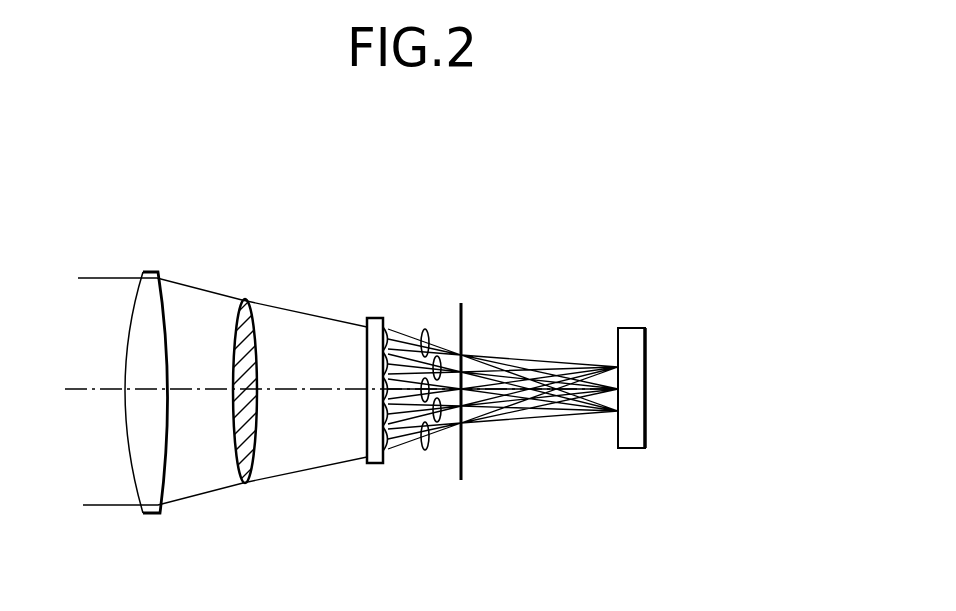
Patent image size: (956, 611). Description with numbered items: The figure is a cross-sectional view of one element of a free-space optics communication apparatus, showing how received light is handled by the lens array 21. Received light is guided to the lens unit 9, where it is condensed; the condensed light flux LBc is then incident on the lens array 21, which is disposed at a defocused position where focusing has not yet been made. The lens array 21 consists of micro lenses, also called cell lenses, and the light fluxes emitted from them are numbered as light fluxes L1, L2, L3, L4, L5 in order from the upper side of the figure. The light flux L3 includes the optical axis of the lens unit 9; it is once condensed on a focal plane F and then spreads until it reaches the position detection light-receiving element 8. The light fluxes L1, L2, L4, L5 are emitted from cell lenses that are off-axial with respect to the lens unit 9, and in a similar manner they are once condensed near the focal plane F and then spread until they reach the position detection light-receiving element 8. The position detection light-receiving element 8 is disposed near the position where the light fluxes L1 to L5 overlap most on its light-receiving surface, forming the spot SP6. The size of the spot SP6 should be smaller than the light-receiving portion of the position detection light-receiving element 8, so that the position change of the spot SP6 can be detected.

The lens unit 9 is at (153, 274).
The light flux LBc is at (242, 298).
The lens array 21 is at (372, 318).
The light flux L1 is at (424, 329).
The light flux L2 is at (437, 355).
The light flux L3 is at (421, 379).
The light flux L4 is at (437, 423).
The light flux L5 is at (425, 451).
The focal plane F is at (463, 461).
The spot SP6 is at (617, 364).
The position detection light-receiving element 8 is at (632, 335).